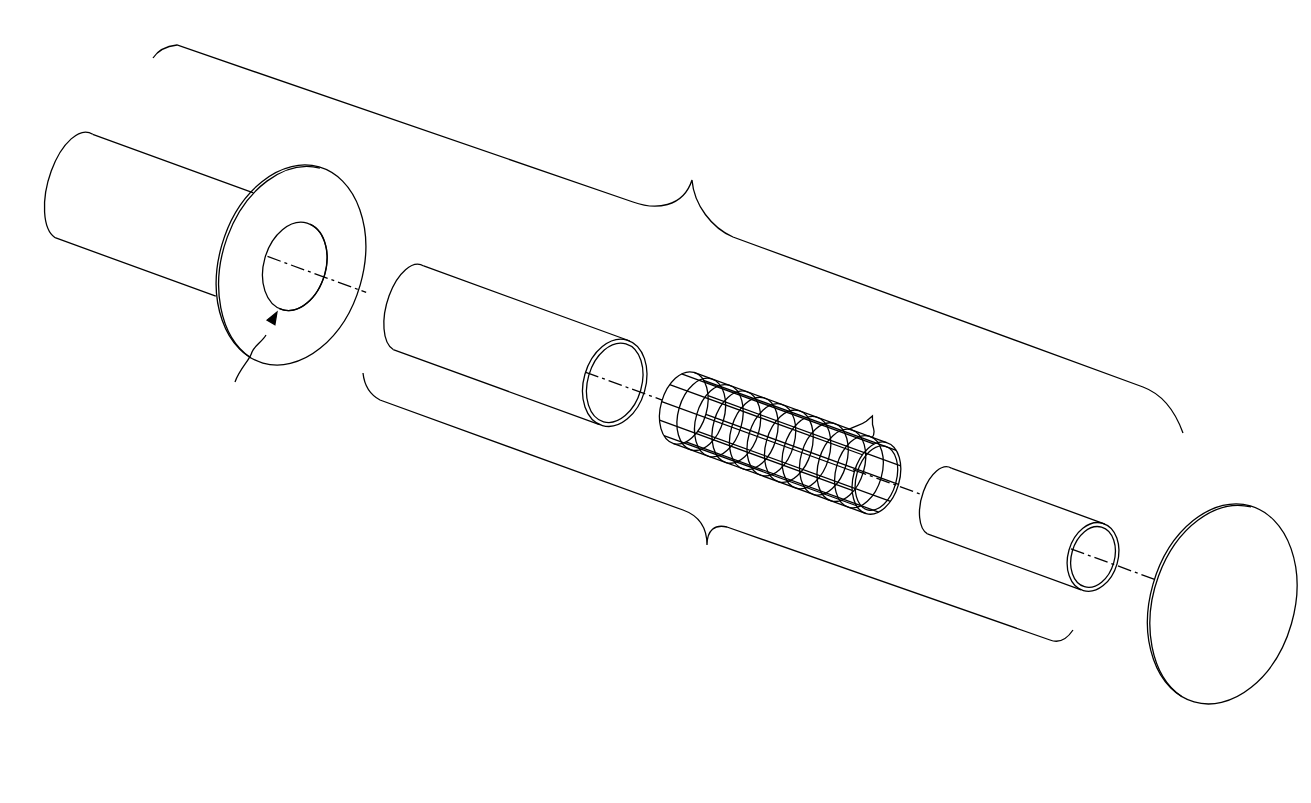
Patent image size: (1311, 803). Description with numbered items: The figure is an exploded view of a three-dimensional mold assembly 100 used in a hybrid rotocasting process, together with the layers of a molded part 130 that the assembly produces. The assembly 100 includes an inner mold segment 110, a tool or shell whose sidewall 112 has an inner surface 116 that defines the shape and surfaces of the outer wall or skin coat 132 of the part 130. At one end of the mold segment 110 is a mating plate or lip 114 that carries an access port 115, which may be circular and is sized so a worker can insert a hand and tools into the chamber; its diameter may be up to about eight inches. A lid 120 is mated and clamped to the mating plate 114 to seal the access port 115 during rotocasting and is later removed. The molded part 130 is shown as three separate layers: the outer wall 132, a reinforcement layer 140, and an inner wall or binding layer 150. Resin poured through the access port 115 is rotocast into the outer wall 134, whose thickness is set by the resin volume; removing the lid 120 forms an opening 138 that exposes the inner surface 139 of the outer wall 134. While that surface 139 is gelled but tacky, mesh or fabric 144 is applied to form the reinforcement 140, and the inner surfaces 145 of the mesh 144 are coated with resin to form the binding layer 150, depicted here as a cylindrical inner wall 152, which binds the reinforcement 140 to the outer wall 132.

The mold assembly 100 is at (670, 397).
The inner mold segment 110 is at (140, 300).
The sidewall 112 is at (170, 163).
The mating plate 114 is at (333, 168).
The access port 115 is at (327, 262).
The inner surface 116 is at (307, 238).
The lid 120 is at (1167, 692).
The molded part 130 is at (747, 426).
The outer wall 132 is at (556, 297).
The outer wall 134 is at (580, 333).
The opening 138 is at (645, 351).
The inner surface 139 is at (628, 380).
The reinforcement layer 140 is at (762, 387).
The mesh 144 is at (858, 426).
The inner surface 145 is at (897, 471).
The inner wall 150 is at (1037, 491).
The inner wall 152 is at (1070, 522).